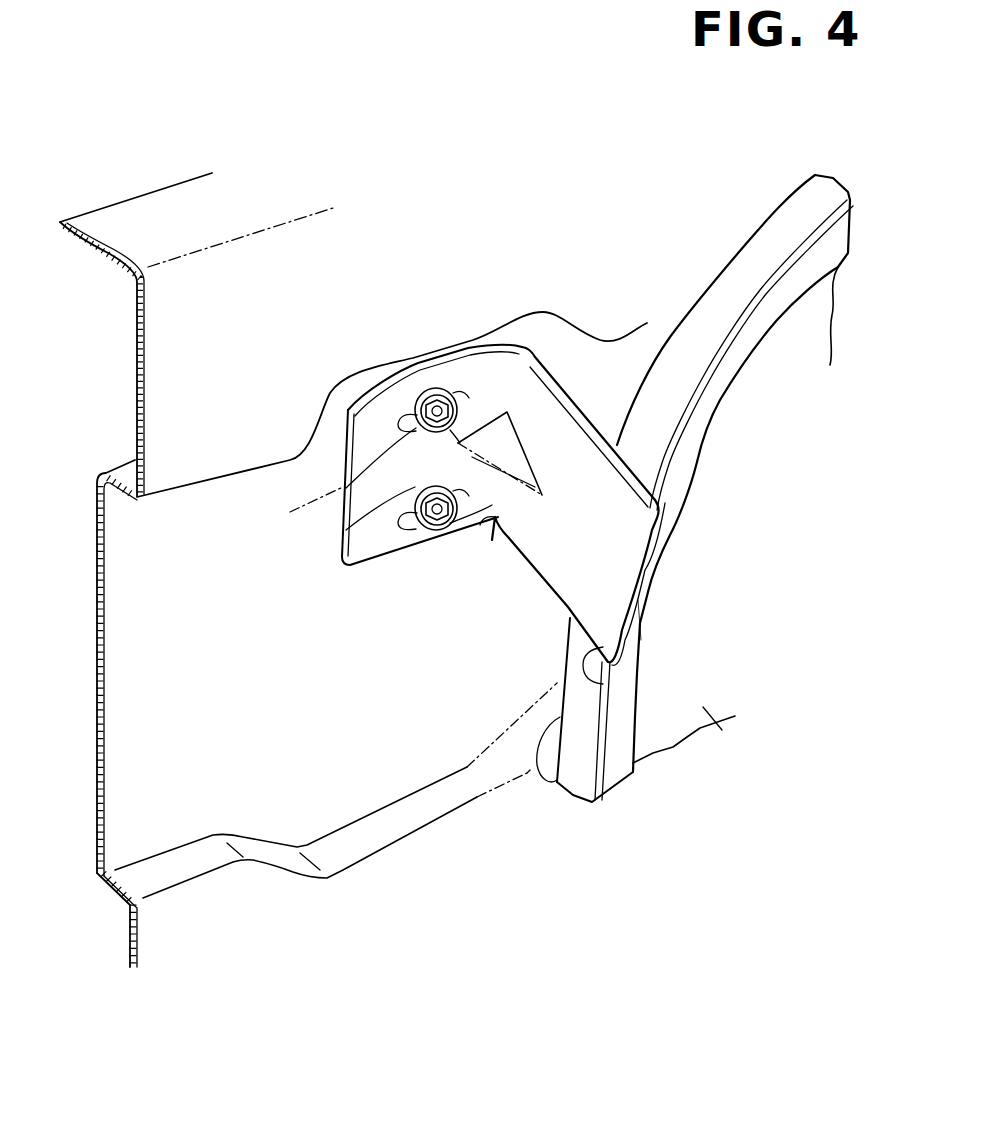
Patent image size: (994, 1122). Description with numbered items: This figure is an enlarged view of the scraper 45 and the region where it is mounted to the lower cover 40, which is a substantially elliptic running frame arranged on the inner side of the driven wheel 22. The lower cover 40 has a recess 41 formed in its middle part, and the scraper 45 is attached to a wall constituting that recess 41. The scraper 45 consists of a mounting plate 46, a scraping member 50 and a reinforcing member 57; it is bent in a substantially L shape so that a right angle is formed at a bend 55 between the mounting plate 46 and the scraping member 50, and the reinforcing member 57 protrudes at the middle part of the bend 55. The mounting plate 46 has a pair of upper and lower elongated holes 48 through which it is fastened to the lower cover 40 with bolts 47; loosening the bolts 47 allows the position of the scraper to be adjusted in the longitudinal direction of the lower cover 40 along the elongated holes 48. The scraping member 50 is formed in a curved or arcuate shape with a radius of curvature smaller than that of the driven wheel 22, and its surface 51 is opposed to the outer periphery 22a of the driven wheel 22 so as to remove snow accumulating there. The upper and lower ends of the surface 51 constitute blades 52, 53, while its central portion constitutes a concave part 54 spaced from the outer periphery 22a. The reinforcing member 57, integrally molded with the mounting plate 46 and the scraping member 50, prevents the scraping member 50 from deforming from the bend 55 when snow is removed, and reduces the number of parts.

The lower cover 40 is at (180, 203).
The recess 41 is at (243, 503).
The scraper 45 is at (680, 128).
The mounting plate 46 is at (462, 367).
The reinforcing member 57 is at (495, 405).
The scraping member 50 is at (583, 450).
The bolt 47 is at (425, 445).
The elongated hole 48 is at (407, 430).
The bend 55 is at (492, 510).
The driven wheel 22 is at (732, 718).
The outer periphery 22a is at (533, 775).
The blade 52 is at (617, 462).
The surface 51 is at (658, 553).
The concave part 54 is at (637, 587).
The blade 53 is at (603, 690).